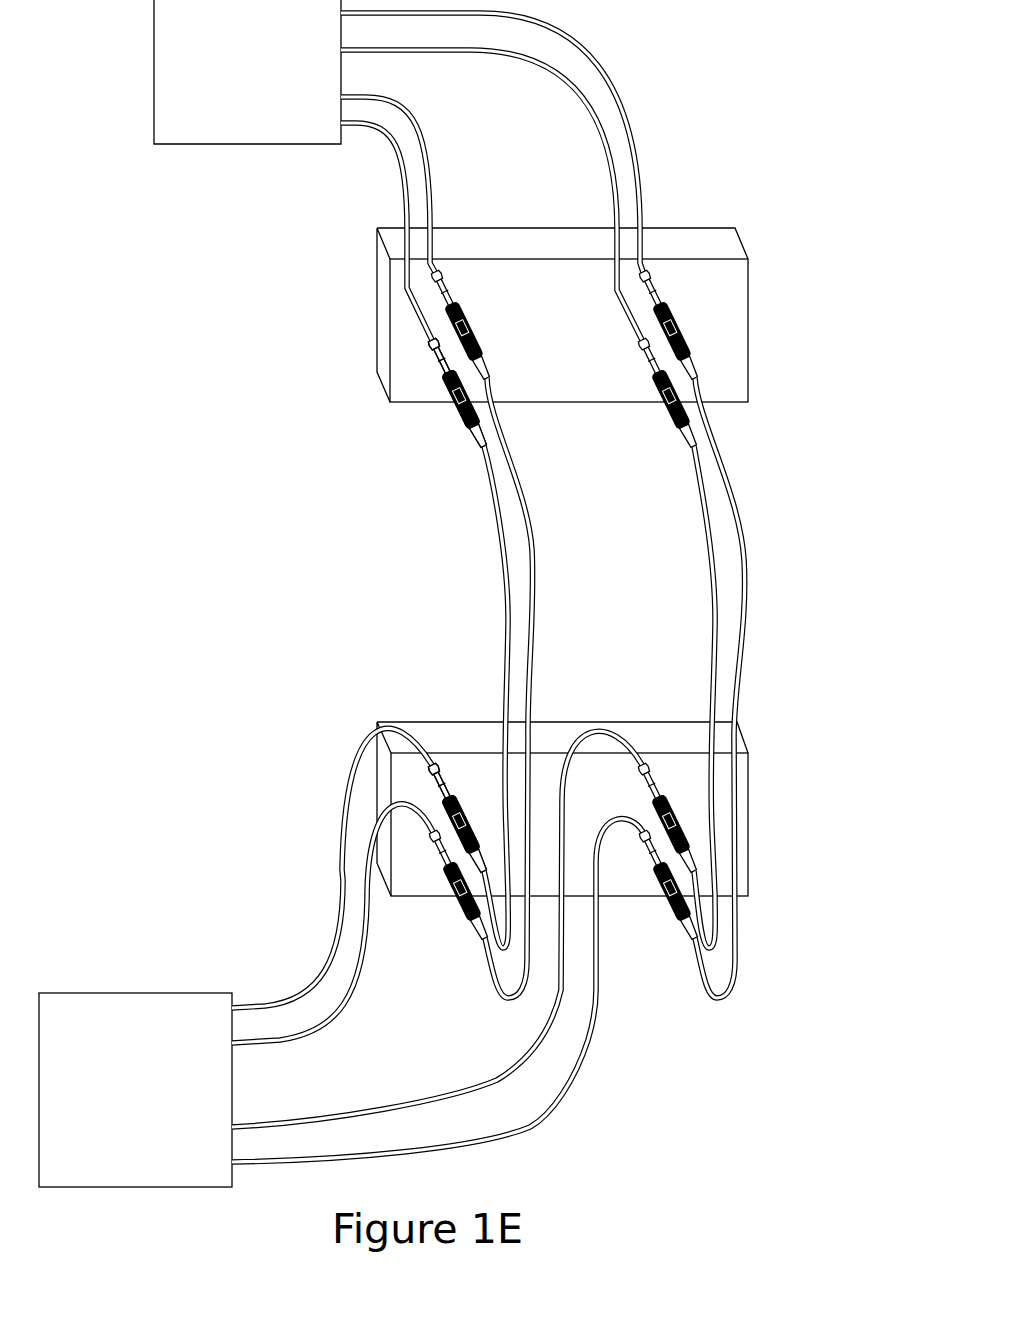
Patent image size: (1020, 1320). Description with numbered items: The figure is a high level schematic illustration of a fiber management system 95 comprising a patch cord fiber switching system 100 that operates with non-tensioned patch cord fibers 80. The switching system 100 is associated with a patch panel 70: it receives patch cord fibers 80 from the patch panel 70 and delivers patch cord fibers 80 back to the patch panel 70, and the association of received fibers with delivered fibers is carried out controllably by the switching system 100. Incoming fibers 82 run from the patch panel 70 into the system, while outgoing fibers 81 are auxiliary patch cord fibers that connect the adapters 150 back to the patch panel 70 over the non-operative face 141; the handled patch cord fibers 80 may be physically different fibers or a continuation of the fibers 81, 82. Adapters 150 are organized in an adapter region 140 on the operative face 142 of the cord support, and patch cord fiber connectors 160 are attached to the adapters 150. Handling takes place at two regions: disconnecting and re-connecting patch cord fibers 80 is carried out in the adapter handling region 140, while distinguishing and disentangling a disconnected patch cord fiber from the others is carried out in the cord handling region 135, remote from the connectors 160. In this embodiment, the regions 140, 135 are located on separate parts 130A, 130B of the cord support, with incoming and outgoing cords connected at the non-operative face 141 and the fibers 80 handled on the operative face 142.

The patch panel 70 is at (154, 25).
The patch cord fibers 80 is at (497, 507).
The outgoing fibers 81 is at (285, 993).
The incoming fibers 82 is at (617, 68).
The fiber management system 95 is at (822, 70).
The patch cord fiber switching system 100 is at (728, 158).
The cord support part 130A is at (752, 853).
The cord support part 130B is at (748, 363).
The cord handling region 135 is at (745, 420).
The adapter region 140 is at (685, 803).
The non-operative face 141 is at (478, 222).
The operative face 142 is at (508, 287).
The adapters 150 is at (445, 402).
The patch cord fiber connectors 160 is at (472, 437).